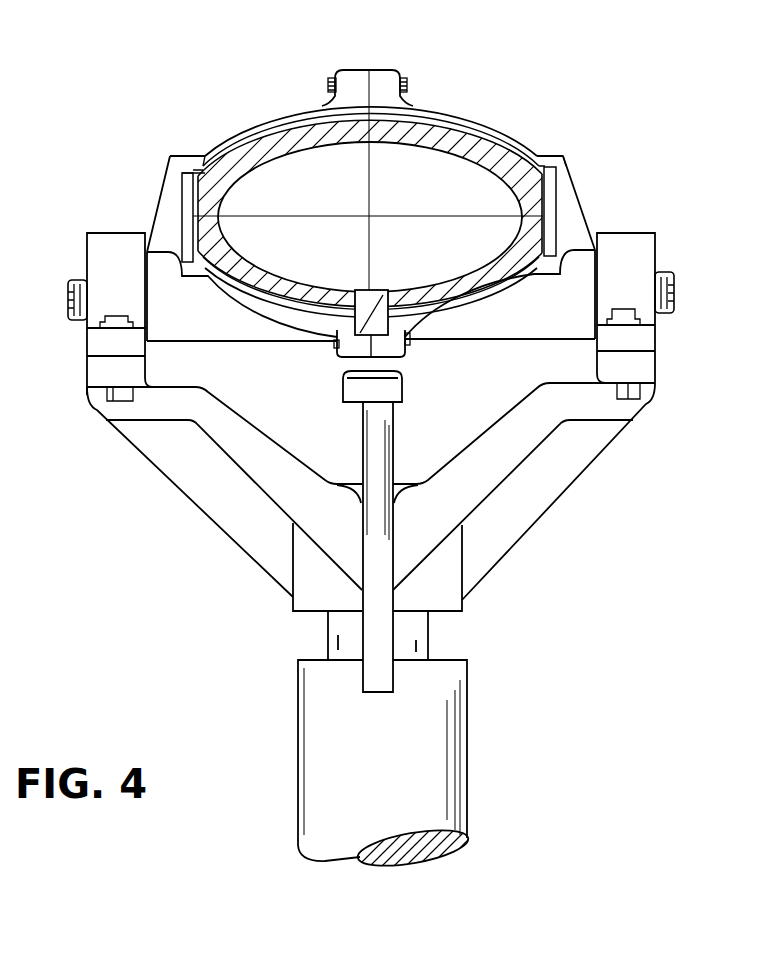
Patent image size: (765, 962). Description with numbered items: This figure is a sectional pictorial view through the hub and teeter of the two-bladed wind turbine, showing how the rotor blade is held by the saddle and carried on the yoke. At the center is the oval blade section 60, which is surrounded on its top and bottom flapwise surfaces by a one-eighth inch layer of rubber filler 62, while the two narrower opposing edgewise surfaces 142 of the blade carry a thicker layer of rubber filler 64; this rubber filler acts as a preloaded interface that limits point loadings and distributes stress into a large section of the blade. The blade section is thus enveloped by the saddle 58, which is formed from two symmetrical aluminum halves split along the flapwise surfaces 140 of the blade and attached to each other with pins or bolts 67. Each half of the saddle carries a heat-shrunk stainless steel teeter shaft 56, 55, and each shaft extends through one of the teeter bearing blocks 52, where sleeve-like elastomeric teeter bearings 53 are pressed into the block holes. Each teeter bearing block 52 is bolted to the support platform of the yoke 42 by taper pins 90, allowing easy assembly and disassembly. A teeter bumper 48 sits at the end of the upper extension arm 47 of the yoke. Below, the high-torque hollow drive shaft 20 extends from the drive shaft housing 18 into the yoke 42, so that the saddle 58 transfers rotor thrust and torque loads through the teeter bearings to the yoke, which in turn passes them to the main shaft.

The drive shaft housing 18 is at (458, 704).
The drive shaft 20 is at (430, 628).
The yoke 42 is at (215, 557).
The upper extension arm 47 is at (394, 437).
The teeter bumper 48 is at (408, 392).
The teeter bearing block 52 is at (102, 260).
The teeter bearing 53 is at (72, 272).
The teeter shaft 55 is at (678, 290).
The teeter shaft 56 is at (66, 303).
The saddle 58 is at (168, 157).
The oval blade section 60 is at (275, 150).
The rubber filler layer 62 is at (417, 108).
The rubber filler layer 64 is at (565, 157).
The pins or bolts 67 is at (402, 78).
The taper pin 90 is at (150, 305).
The flapwise surfaces 140 is at (304, 128).
The edgewise surfaces 142 is at (170, 212).